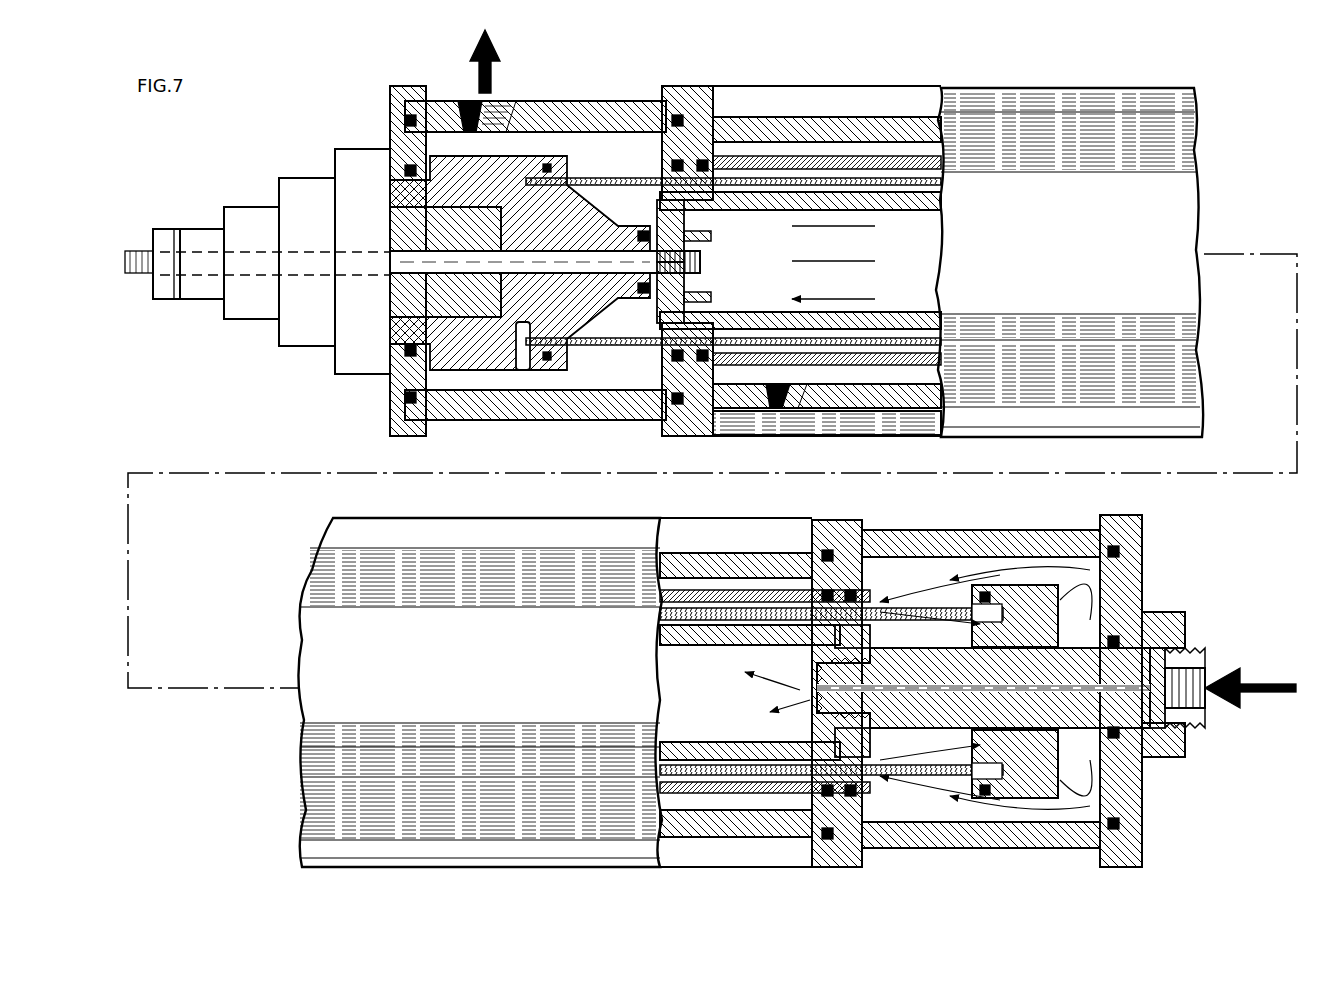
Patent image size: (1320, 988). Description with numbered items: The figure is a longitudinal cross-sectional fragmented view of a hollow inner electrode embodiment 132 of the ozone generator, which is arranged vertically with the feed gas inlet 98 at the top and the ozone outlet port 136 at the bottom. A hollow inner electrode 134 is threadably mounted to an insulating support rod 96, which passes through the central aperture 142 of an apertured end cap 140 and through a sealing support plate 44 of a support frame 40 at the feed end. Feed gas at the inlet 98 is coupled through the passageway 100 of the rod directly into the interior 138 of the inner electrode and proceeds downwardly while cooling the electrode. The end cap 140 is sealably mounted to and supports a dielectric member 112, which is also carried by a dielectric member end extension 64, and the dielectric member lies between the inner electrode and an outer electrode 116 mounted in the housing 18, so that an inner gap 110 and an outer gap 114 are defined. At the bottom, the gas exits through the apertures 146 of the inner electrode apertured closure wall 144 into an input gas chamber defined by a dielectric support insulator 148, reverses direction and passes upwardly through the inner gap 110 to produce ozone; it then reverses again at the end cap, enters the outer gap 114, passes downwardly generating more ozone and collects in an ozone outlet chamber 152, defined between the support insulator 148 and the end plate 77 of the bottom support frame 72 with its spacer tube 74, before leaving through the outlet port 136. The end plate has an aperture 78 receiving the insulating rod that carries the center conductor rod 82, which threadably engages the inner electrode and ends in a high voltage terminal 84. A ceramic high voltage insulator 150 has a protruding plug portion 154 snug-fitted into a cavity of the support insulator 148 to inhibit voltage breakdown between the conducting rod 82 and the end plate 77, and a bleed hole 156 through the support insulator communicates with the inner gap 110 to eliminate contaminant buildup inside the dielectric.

The housing 18 is at (788, 422).
The support frame 40 is at (957, 528).
The sealing support plate 44 is at (1135, 542).
The dielectric member end extension 64 is at (925, 778).
The support frame 72 is at (488, 425).
The spacer tube 74 is at (538, 402).
The end plate 77 is at (392, 90).
The aperture 78 is at (385, 185).
The center conductor rod 82 is at (604, 270).
The high voltage terminal 84 is at (143, 255).
The insulating support rod 96 is at (1142, 606).
The feed gas inlet 98 is at (1203, 662).
The passageway 100 is at (1147, 752).
The inner gap 110 is at (948, 205).
The dielectric member 112 is at (948, 180).
The outer gap 114 is at (936, 122).
The outer electrode 116 is at (797, 155).
The hollow inner electrode embodiment 132 is at (315, 160).
The hollow inner electrode 134 is at (942, 220).
The ozone outlet port 136 is at (465, 108).
The interior 138 is at (914, 260).
The apertured end cap 140 is at (1144, 818).
The central aperture 142 is at (995, 660).
The apertured closure wall 144 is at (705, 238).
The apertures 146 is at (705, 296).
The dielectric support insulator 148 is at (530, 180).
The high voltage insulator 150 is at (342, 360).
The ozone outlet chamber 152 is at (640, 152).
The plug portion 154 is at (400, 292).
The bleed hole 156 is at (522, 360).